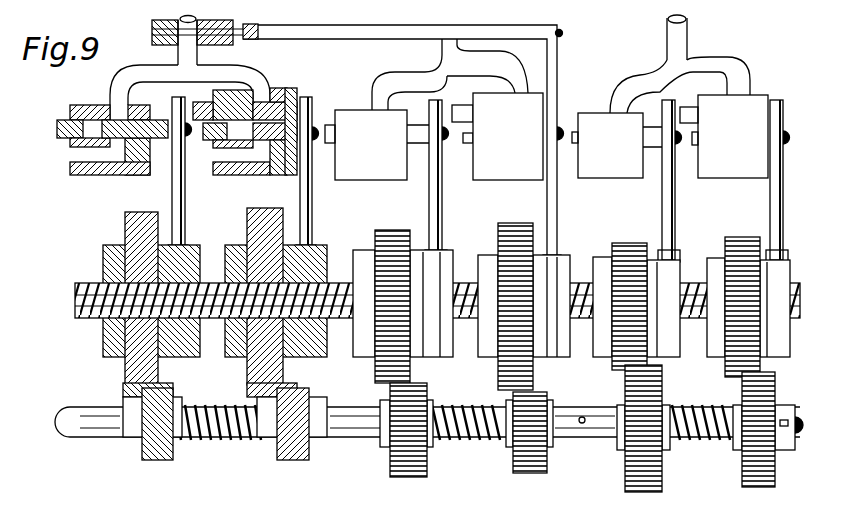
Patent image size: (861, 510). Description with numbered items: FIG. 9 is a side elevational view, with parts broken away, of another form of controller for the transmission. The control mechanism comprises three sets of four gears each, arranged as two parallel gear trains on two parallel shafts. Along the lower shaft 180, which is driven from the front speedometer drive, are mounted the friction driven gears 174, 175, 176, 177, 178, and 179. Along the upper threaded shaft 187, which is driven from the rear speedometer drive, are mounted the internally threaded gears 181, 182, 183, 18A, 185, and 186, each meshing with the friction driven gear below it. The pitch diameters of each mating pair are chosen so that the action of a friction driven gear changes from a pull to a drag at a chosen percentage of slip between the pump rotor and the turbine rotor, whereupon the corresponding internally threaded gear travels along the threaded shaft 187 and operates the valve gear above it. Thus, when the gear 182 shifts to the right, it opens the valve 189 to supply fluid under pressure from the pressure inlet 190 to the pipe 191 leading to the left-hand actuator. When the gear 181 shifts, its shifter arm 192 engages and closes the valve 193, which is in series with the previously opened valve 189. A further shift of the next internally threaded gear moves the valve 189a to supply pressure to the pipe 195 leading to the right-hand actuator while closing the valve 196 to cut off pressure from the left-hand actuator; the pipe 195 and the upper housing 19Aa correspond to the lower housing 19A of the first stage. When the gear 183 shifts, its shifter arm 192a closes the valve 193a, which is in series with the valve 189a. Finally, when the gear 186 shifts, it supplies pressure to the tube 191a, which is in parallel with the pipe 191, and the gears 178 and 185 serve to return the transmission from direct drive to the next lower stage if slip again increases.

The friction driven gear 174 is at (145, 458).
The friction driven gear 175 is at (283, 458).
The friction driven gear 176 is at (405, 465).
The friction driven gear 177 is at (515, 465).
The friction driven gear 178 is at (662, 482).
The friction driven gear 179 is at (760, 484).
The shaft 180 is at (90, 437).
The internally threaded gear 181 is at (125, 230).
The internally threaded gear 182 is at (247, 230).
The internally threaded gear 183 is at (378, 240).
The gear 18A is at (513, 224).
The internally threaded gear 185 is at (628, 243).
The internally threaded gear 186 is at (745, 216).
The threaded shaft 187 is at (75, 303).
The valve 189 is at (265, 165).
The valve 189a is at (468, 143).
The pressure inlet 190 is at (67, 162).
The pipe 191 is at (178, 50).
The tube 191a is at (678, 35).
The shifter arm 192 is at (172, 188).
The shifter arm 192a is at (428, 195).
The valve 193 is at (295, 90).
The valve 193a is at (488, 92).
The pipe 195 is at (450, 45).
The valve 196 is at (237, 40).
The valve housing 19A is at (60, 120).
The valve housing 19Aa is at (325, 125).